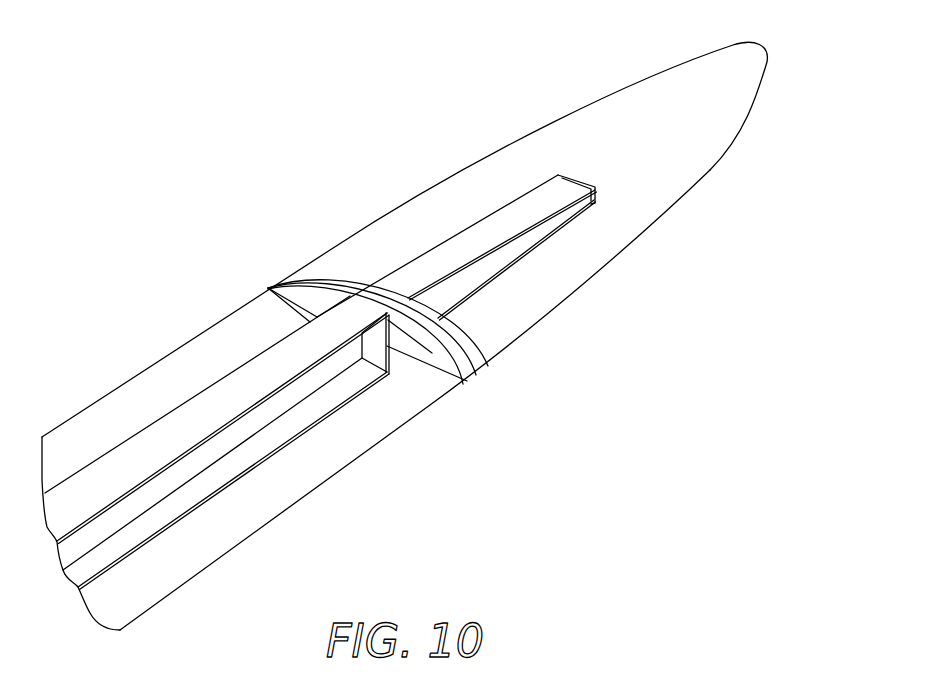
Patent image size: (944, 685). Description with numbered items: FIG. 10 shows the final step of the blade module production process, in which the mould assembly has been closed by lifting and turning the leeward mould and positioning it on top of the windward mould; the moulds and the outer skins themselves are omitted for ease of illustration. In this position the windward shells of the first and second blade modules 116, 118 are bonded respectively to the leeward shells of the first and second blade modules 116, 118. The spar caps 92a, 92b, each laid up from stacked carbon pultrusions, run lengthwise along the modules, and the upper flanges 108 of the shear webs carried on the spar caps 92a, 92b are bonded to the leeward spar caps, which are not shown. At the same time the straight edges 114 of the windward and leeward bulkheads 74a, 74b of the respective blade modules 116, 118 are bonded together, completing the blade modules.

The bulkhead 74a is at (432, 350).
The bulkhead 74b is at (477, 340).
The spar cap 92a is at (251, 377).
The spar cap 92b is at (420, 266).
The upper horizontal flange 108 is at (130, 450).
The straight upper edge 114 is at (442, 373).
The first blade module 116 is at (205, 560).
The second blade module 118 is at (641, 226).